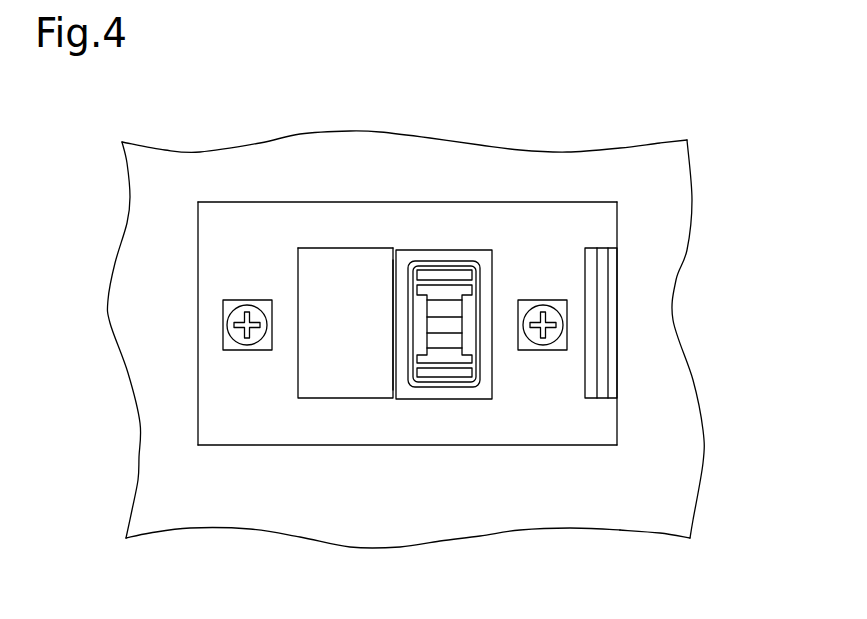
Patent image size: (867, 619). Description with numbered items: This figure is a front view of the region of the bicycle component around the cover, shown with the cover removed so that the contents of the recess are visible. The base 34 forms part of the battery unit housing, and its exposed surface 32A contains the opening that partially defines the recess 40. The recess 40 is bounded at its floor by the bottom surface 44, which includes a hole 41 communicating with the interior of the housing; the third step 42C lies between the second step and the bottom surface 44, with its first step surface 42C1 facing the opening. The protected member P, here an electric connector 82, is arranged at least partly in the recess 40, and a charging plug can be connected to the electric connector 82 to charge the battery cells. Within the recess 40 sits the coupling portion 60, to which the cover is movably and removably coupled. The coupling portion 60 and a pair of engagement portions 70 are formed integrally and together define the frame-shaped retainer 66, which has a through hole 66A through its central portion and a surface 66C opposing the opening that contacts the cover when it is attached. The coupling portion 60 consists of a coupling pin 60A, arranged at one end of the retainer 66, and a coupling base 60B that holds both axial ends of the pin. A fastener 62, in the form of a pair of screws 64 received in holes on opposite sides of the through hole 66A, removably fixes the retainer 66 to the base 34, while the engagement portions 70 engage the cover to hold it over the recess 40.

The retainer 66 is at (560, 119).
The through hole 66A is at (348, 258).
The surface 66C is at (215, 440).
The engagement portions 70 is at (282, 323).
The recess 40 is at (430, 210).
The hole 41 is at (404, 275).
The bottom surface 44 is at (441, 258).
The electric connector 82 is at (444, 372).
The coupling portion 60 is at (533, 437).
The coupling pin 60A is at (603, 355).
The coupling base 60B is at (560, 220).
The fastener 62 is at (210, 257).
The screws 64 is at (238, 302).
The third step 42C is at (313, 383).
The first step surface 42C1 is at (367, 370).
The base 34 is at (567, 520).
The exposed surface 32A is at (657, 522).
The protected member P is at (458, 503).